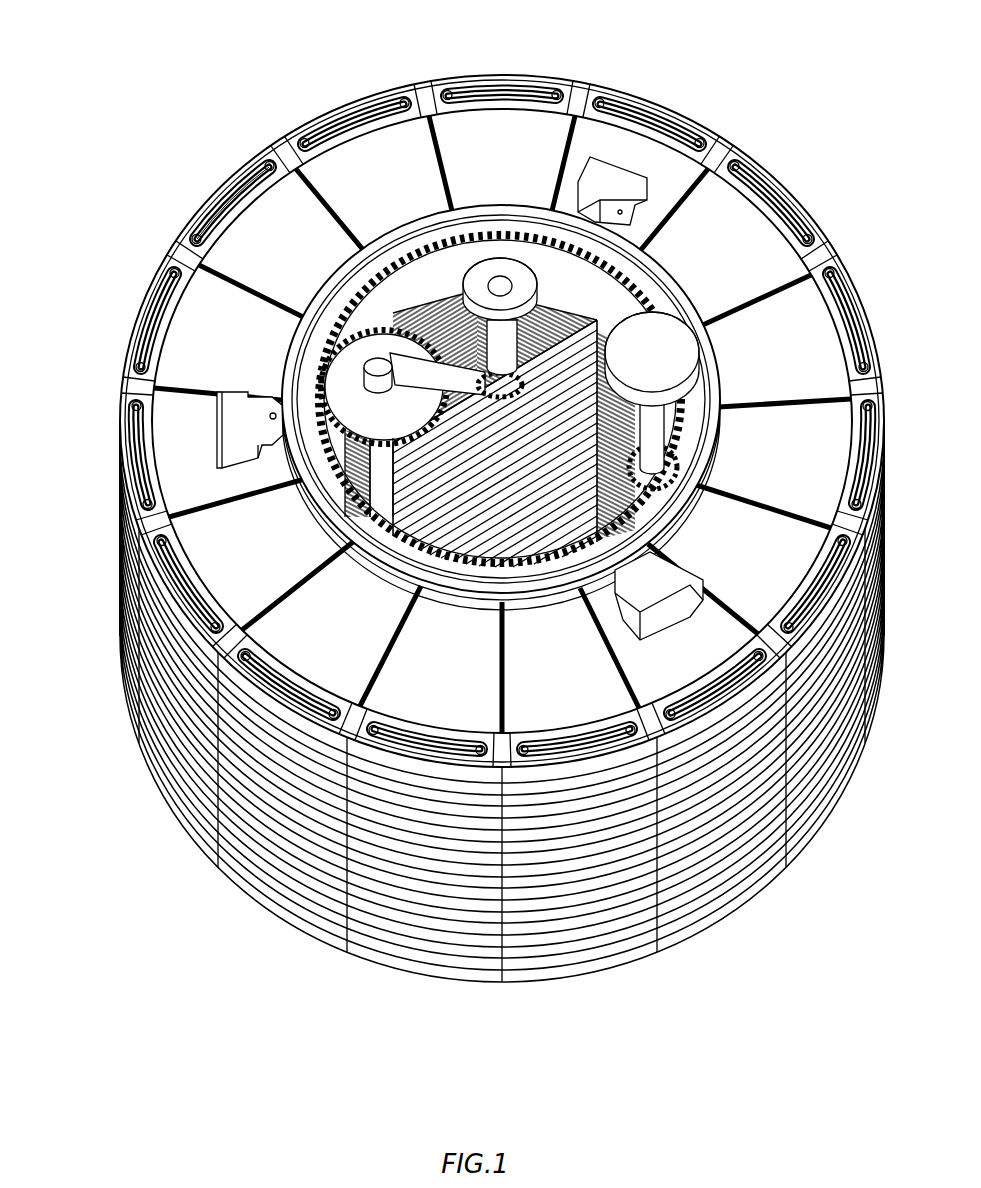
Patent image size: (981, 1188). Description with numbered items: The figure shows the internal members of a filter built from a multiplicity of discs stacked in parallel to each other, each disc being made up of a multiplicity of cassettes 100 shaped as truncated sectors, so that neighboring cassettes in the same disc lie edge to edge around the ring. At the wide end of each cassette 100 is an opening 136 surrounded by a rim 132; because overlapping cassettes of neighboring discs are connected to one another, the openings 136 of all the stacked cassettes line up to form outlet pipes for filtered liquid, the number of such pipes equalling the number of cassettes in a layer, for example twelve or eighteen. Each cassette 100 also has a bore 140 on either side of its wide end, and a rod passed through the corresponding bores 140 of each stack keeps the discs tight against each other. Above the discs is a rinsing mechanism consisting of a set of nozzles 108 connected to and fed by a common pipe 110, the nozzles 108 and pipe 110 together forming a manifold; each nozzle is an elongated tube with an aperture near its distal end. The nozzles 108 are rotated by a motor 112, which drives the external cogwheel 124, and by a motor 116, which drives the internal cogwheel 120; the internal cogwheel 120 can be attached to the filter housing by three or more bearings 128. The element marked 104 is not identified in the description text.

The cassette 100 is at (677, 663).
The turntable platform 104 is at (333, 297).
The nozzles 108 is at (497, 258).
The common pipe 110 is at (380, 483).
The motor 112 is at (420, 280).
The motor 116 is at (668, 342).
The internal cogwheel 120 is at (240, 215).
The external cogwheel 124 is at (352, 380).
The bearings 128 is at (213, 413).
The rim 132 is at (690, 118).
The opening 136 is at (627, 93).
The bore 140 is at (120, 358).